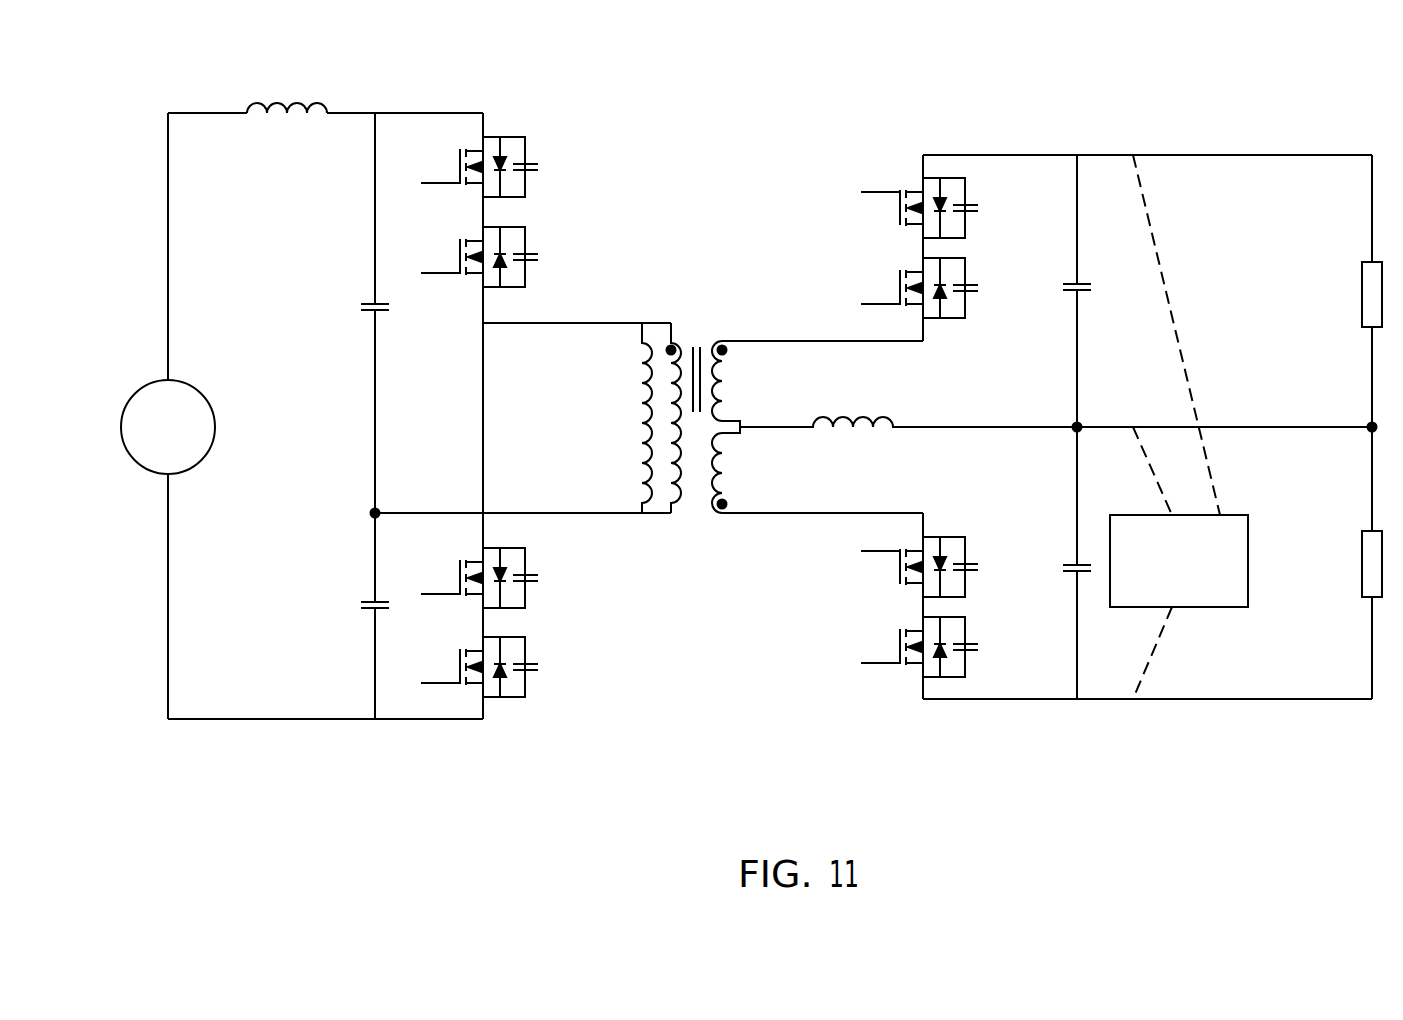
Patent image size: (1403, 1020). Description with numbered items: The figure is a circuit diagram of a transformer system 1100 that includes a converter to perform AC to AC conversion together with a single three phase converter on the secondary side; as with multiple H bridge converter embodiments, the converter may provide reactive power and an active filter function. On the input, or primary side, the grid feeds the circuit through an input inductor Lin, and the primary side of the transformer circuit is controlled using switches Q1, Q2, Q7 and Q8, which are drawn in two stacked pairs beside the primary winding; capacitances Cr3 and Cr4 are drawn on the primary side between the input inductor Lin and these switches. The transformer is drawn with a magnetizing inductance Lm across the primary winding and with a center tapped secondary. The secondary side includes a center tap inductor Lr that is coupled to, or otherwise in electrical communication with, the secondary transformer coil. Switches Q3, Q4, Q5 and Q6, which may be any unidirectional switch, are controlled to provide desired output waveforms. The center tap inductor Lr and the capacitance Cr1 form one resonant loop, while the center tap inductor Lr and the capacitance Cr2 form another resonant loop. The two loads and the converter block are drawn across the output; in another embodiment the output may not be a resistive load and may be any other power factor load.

The transformer system 1100 is at (751, 376).
The switch Q1 is at (479, 167).
The switch Q2 is at (479, 257).
The switch Q3 is at (919, 195).
The switch Q4 is at (919, 288).
The switch Q5 is at (919, 554).
The switch Q6 is at (919, 647).
The switch Q7 is at (479, 578).
The switch Q8 is at (479, 667).
The capacitance Cr1 is at (1057, 275).
The capacitance Cr2 is at (1057, 548).
The resonant capacitor Cr3 is at (354, 292).
The resonant capacitor Cr4 is at (354, 583).
The input inductor Lin is at (365, 88).
The magnetizing inductance Lm is at (627, 418).
The center tap inductor Lr is at (1056, 403).